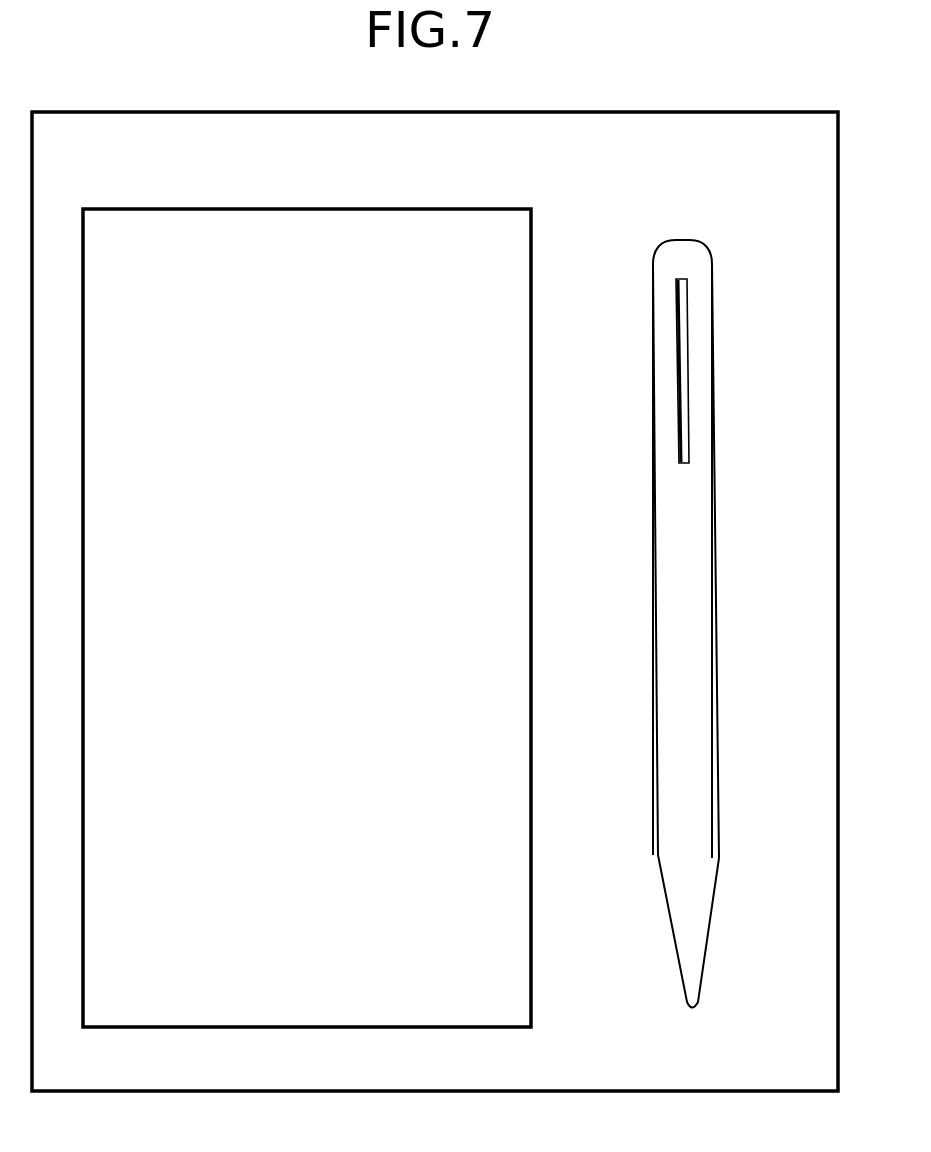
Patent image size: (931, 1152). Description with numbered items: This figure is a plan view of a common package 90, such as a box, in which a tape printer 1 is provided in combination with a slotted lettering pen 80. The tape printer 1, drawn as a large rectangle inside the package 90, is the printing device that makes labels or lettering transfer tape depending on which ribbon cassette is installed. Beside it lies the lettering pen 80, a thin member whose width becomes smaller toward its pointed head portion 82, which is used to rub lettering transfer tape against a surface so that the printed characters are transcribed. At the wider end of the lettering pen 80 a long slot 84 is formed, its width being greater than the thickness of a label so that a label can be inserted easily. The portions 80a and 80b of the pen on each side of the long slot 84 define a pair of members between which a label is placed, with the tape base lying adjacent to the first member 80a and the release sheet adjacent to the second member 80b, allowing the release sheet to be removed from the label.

The package 90 is at (513, 106).
The tape printer 1 is at (298, 208).
The lettering pen 80 is at (684, 609).
The first member 80a is at (668, 343).
The second member 80b is at (697, 343).
The pointed head portion 82 is at (702, 965).
The long slot 84 is at (684, 297).